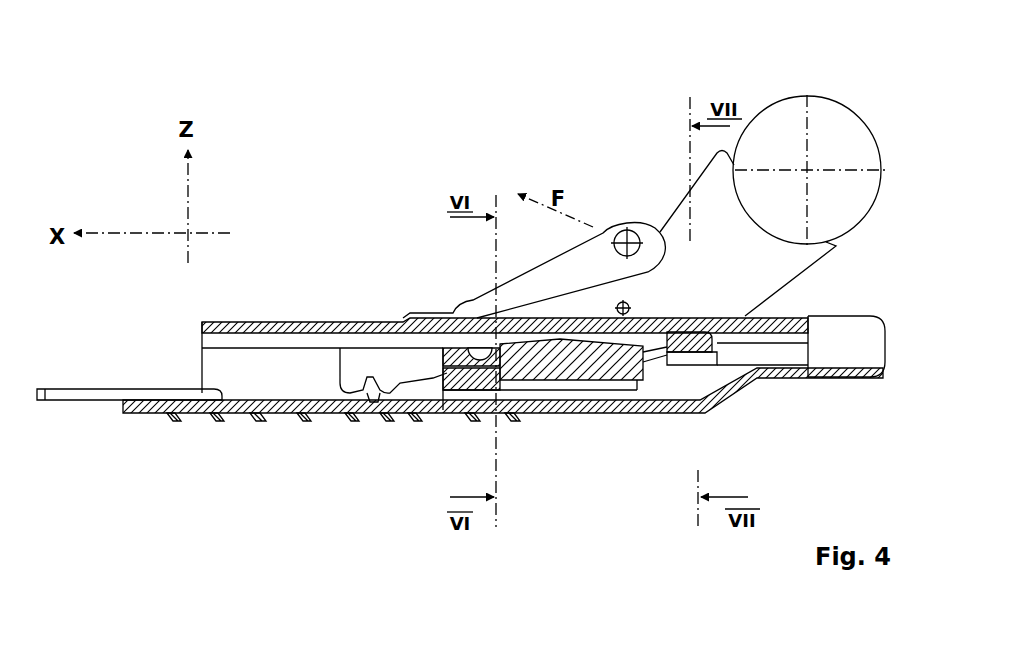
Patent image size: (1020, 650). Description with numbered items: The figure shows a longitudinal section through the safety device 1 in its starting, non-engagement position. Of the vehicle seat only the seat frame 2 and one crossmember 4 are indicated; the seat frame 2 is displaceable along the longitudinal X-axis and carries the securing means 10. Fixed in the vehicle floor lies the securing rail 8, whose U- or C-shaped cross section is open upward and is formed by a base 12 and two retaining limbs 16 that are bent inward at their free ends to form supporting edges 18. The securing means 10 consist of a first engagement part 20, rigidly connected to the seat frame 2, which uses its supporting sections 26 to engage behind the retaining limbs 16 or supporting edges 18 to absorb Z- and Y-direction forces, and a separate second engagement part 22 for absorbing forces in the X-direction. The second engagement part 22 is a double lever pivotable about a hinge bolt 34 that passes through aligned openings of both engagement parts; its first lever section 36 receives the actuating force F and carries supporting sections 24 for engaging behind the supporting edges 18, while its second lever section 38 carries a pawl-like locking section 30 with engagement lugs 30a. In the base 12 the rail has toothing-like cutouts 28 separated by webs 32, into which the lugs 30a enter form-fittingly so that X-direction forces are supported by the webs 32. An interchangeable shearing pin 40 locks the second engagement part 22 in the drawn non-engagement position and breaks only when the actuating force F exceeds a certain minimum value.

The safety device 1 is at (528, 541).
The seat frame 2 is at (748, 83).
The crossmember 4 is at (795, 128).
The securing rail 8 is at (540, 414).
The securing means 10 is at (548, 277).
The base 12 is at (577, 407).
The retaining limbs 16 is at (247, 376).
The supporting edges 18 is at (265, 322).
The first engagement part 20 is at (662, 378).
The second engagement part 22 is at (437, 361).
The supporting sections 24 is at (600, 378).
The supporting sections 26 is at (707, 352).
The toothing-like cutouts 28 is at (248, 421).
The locking section 30 is at (377, 363).
The engagement lugs 30a is at (372, 413).
The webs 32 is at (300, 421).
The hinge bolt 34 is at (470, 303).
The first lever section 36 is at (628, 229).
The second lever section 38 is at (420, 357).
The shearing pin 40 is at (640, 303).